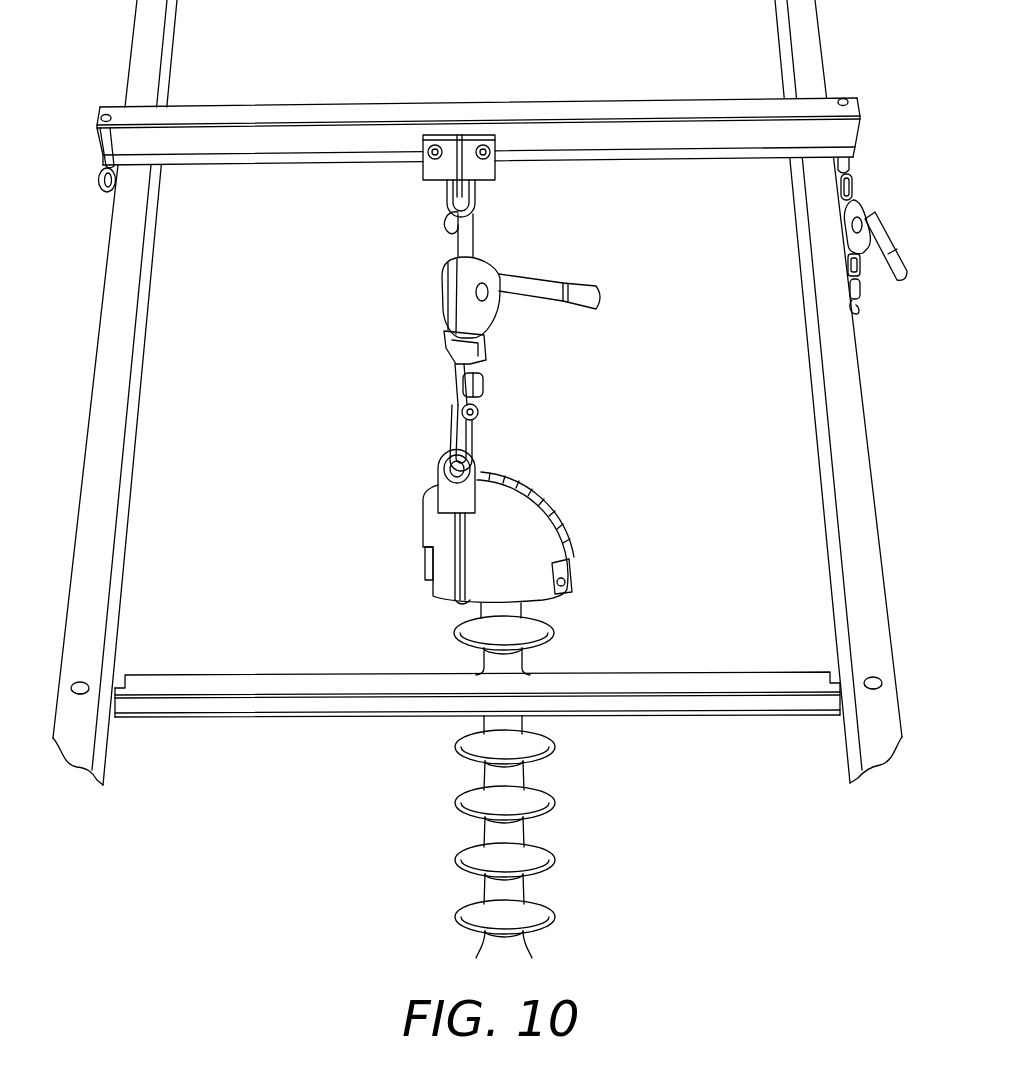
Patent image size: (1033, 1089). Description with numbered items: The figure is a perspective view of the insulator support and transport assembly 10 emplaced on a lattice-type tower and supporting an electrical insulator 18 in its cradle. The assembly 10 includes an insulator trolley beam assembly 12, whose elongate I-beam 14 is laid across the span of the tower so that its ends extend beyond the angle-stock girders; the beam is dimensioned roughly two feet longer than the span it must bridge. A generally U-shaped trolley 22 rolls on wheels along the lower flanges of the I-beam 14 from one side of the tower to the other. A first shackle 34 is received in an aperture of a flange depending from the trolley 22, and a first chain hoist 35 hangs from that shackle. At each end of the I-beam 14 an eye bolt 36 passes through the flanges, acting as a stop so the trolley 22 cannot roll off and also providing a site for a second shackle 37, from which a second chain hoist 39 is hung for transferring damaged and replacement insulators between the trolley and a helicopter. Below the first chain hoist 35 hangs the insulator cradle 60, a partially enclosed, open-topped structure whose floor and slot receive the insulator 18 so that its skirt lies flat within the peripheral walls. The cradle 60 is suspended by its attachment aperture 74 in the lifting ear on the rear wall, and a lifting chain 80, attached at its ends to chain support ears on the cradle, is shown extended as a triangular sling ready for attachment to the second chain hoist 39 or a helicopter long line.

The insulator support and transport assembly 10 is at (537, 188).
The insulator trolley beam assembly 12 is at (530, 86).
The I-beam 14 is at (597, 100).
The insulator 18 is at (468, 855).
The trolley 22 is at (432, 172).
The first shackle 34 is at (475, 202).
The first chain hoist 35 is at (440, 297).
The eye bolt 36 is at (108, 143).
The second shackle 37 is at (100, 185).
The second chain hoist 39 is at (860, 213).
The insulator cradle 60 is at (415, 524).
The attachment aperture 74 is at (447, 470).
The lifting chain 80 is at (517, 500).